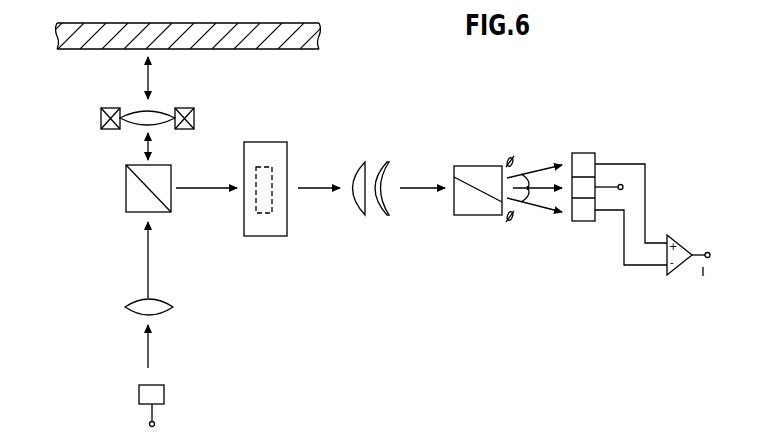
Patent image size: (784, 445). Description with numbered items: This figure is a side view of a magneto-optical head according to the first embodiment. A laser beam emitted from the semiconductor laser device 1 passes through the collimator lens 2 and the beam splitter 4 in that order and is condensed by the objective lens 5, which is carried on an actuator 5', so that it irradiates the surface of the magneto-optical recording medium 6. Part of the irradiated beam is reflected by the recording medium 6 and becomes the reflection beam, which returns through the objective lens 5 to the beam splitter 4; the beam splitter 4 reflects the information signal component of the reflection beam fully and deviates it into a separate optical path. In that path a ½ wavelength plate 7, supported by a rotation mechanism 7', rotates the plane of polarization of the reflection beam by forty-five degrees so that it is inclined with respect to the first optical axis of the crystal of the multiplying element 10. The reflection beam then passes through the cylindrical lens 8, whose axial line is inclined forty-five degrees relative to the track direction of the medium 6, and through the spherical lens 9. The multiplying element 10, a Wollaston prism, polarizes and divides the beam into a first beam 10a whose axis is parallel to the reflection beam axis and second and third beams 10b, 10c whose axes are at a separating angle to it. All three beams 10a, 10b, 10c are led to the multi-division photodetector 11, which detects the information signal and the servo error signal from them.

The semiconductor laser device 1 is at (139, 388).
The collimator lens 2 is at (128, 308).
The beam splitter 4 is at (126, 201).
The objective lens 5 is at (143, 100).
The actuator 5' is at (127, 118).
The magneto-optical recording medium 6 is at (321, 36).
The ½ wavelength plate 7 is at (271, 165).
The rotation mechanism 7' is at (265, 204).
The cylindrical lens 8 is at (360, 162).
The spherical lens 9 is at (387, 162).
The multiplying element 10 is at (478, 166).
The first beam 10a is at (562, 193).
The second beam 10b is at (541, 168).
The third beam 10c is at (545, 213).
The multi-division photodetector 11 is at (580, 153).